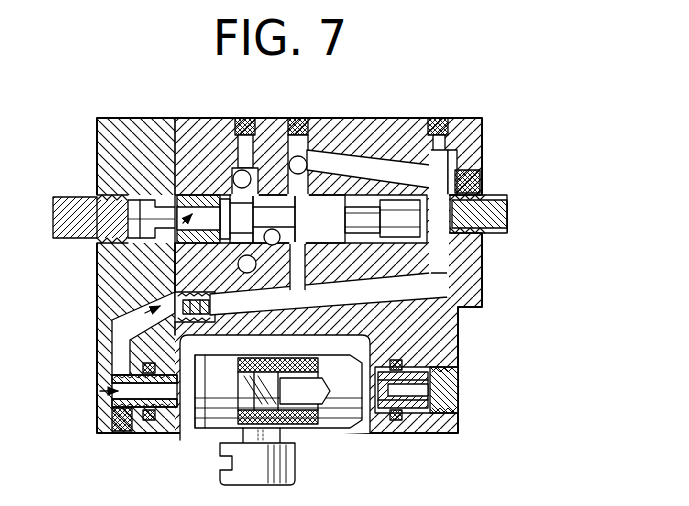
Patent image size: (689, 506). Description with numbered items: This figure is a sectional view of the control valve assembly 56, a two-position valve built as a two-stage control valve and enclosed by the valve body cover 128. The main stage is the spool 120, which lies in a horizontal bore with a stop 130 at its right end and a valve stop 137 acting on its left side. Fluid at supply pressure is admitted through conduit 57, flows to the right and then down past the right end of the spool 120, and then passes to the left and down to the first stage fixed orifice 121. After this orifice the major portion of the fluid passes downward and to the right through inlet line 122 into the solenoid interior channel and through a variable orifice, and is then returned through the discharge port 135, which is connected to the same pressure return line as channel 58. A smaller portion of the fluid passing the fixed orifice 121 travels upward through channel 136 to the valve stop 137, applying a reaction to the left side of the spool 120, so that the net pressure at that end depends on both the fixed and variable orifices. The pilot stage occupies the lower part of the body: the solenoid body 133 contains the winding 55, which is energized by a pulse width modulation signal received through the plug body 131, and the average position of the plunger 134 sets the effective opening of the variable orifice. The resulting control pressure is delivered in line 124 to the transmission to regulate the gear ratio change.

The valve body cover 128 is at (130, 100).
The return pressure line 58 is at (243, 162).
The control pressure line 124 is at (272, 222).
The supply conduit 57 is at (298, 153).
The stop 130 is at (484, 198).
The spool 120 is at (428, 218).
The valve stop 137 is at (175, 240).
The channel 136 is at (175, 263).
The first stage fixed orifice 121 is at (125, 330).
The inlet line 122 is at (100, 391).
The control valve assembly 56 is at (152, 490).
The solenoid body 133 is at (215, 426).
The solenoid winding 55 is at (305, 428).
The plunger 134 is at (410, 392).
The discharge port 135 is at (456, 392).
The plug body 131 is at (265, 479).